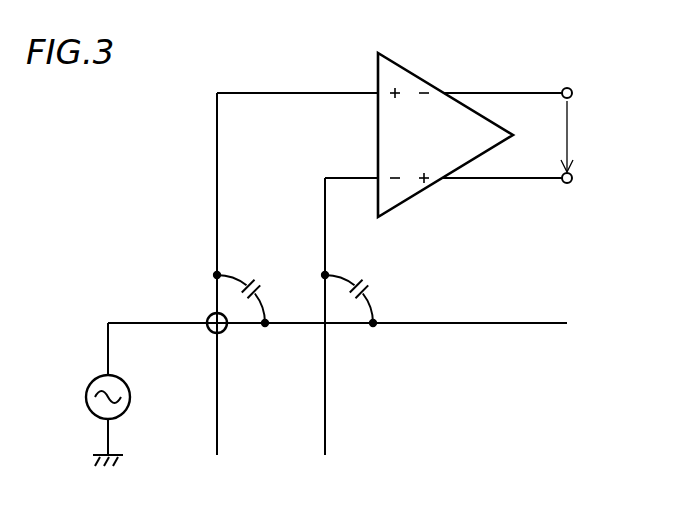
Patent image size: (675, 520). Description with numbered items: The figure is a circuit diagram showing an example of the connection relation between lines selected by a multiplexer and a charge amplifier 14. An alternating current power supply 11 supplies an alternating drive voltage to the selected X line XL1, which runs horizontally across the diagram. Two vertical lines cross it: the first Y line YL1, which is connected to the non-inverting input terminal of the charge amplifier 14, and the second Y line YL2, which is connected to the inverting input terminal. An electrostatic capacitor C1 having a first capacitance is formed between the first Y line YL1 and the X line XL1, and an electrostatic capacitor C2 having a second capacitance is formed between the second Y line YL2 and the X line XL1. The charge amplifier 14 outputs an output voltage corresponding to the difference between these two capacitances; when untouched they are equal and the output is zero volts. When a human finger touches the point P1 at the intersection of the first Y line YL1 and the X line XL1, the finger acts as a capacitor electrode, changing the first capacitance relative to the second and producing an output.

The alternating current power supply 11 is at (134, 398).
The charge amplifier 14 is at (415, 67).
The point P1 is at (204, 316).
The electrostatic capacitor C1 is at (249, 294).
The electrostatic capacitor C2 is at (356, 294).
The X line XL1 is at (360, 325).
The first Y line YL1 is at (215, 287).
The second Y line YL2 is at (322, 330).